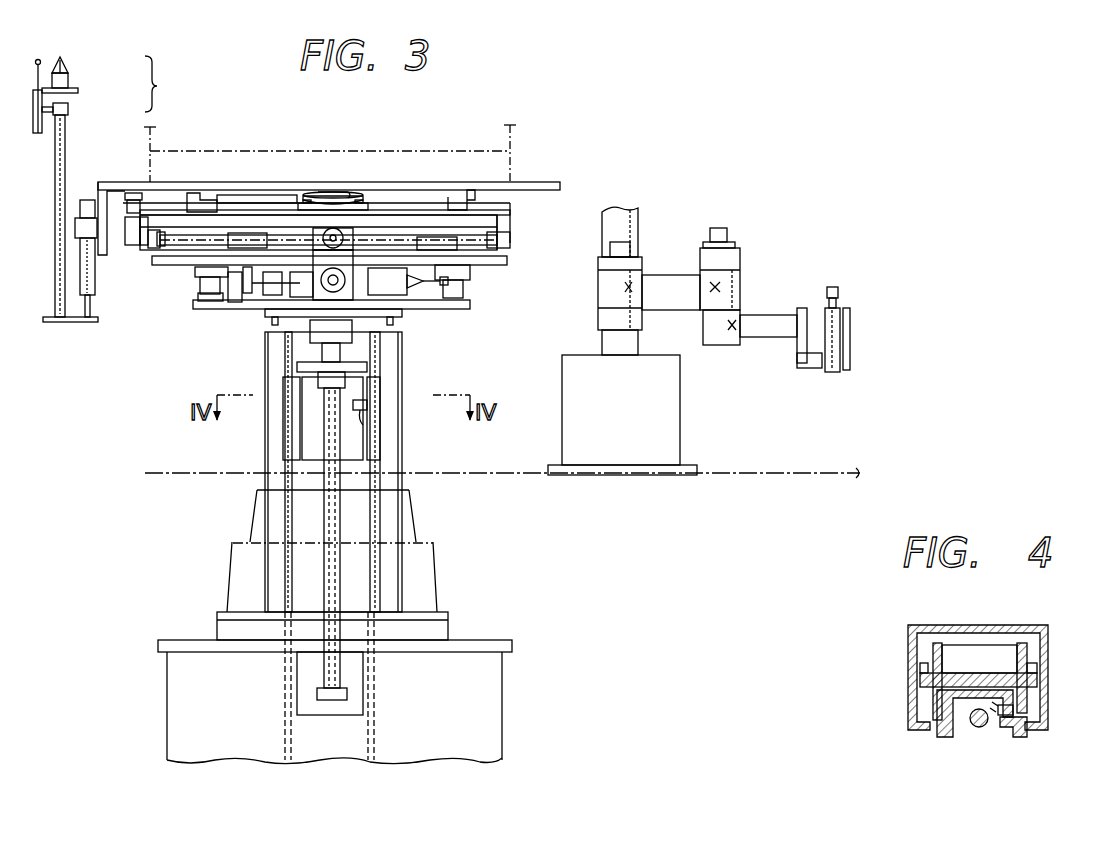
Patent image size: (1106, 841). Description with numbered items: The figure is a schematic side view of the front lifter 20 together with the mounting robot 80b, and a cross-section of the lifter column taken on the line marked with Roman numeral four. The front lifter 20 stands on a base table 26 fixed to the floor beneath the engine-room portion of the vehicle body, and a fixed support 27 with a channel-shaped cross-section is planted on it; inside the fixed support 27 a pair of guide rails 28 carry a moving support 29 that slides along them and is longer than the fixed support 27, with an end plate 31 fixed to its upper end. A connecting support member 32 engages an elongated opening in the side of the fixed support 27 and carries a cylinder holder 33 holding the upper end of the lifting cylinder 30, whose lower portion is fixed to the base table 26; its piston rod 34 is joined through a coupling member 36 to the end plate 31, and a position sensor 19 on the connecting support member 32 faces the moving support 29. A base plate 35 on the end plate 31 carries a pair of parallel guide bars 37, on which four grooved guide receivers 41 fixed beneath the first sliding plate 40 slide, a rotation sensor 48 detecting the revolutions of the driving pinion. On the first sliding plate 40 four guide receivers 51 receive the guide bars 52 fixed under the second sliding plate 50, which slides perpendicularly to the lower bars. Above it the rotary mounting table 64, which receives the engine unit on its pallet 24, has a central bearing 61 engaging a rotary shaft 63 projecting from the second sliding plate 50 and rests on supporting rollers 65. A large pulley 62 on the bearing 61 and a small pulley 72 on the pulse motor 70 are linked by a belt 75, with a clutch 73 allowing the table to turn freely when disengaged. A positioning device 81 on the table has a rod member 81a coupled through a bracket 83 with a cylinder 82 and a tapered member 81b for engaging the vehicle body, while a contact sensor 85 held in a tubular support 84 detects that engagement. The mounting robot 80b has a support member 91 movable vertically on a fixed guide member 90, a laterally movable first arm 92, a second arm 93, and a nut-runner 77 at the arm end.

In FIG. 3, the position sensor 19 is at (362, 412).
In FIG. 4, the position sensor 19 is at (1003, 716).
In FIG. 3, the front lifter 20 is at (512, 146).
In FIG. 3, the pallet 24 is at (150, 146).
In FIG. 3, the base table 26 is at (190, 640).
In FIG. 3, the fixed support 27 is at (401, 380).
In FIG. 4, the fixed support 27 is at (995, 627).
In FIG. 4, the guide rails 28 is at (922, 676).
In FIG. 3, the moving support 29 is at (300, 521).
In FIG. 4, the moving support 29 is at (933, 650).
In FIG. 3, the lifting cylinder 30 is at (350, 481).
In FIG. 4, the lifting cylinder 30 is at (979, 728).
In FIG. 3, the end plate 31 is at (268, 314).
In FIG. 3, the connecting support member 32 is at (297, 445).
In FIG. 4, the connecting support member 32 is at (945, 737).
In FIG. 3, the cylinder holder 33 is at (358, 361).
In FIG. 3, the piston rod 34 is at (325, 352).
In FIG. 3, the base plate 35 is at (437, 310).
In FIG. 3, the coupling member 36 is at (313, 332).
In FIG. 3, the guide bars 37 is at (202, 296).
In FIG. 3, the first sliding plate 40 is at (506, 262).
In FIG. 3, the guide receivers 41 is at (202, 282).
In FIG. 3, the rotation sensor 48 is at (232, 286).
In FIG. 3, the second sliding plate 50 is at (488, 212).
In FIG. 3, the guide receivers 51 is at (200, 250).
In FIG. 3, the guide bars 52 is at (152, 243).
In FIG. 3, the bearing 61 is at (335, 194).
In FIG. 3, the relatively large pulley 62 is at (357, 193).
In FIG. 3, the rotary shaft 63 is at (318, 194).
In FIG. 3, the rotary mounting table 64 is at (430, 202).
In FIG. 3, the supporting rollers 65 is at (197, 193).
In FIG. 3, the pulse motor 70 is at (131, 247).
In FIG. 3, the relatively small pulley 72 is at (142, 215).
In FIG. 3, the clutch 73 is at (130, 196).
In FIG. 3, the belt 75 is at (268, 195).
In FIG. 3, the nut-runner 77 is at (838, 302).
In FIG. 3, the mounting robot 80b is at (762, 266).
In FIG. 3, the positioning device 81 is at (165, 84).
In FIG. 3, the rod member 81a is at (66, 150).
In FIG. 3, the tapered member 81b is at (72, 64).
In FIG. 3, the cylinder 82 is at (96, 292).
In FIG. 3, the bracket 83 is at (72, 323).
In FIG. 3, the tubular support 84 is at (37, 133).
In FIG. 3, the contact sensor 85 is at (42, 66).
In FIG. 3, the fixed guide member 90 is at (640, 232).
In FIG. 3, the support member 91 is at (600, 322).
In FIG. 3, the first arm 92 is at (665, 308).
In FIG. 3, the second arm 93 is at (758, 338).